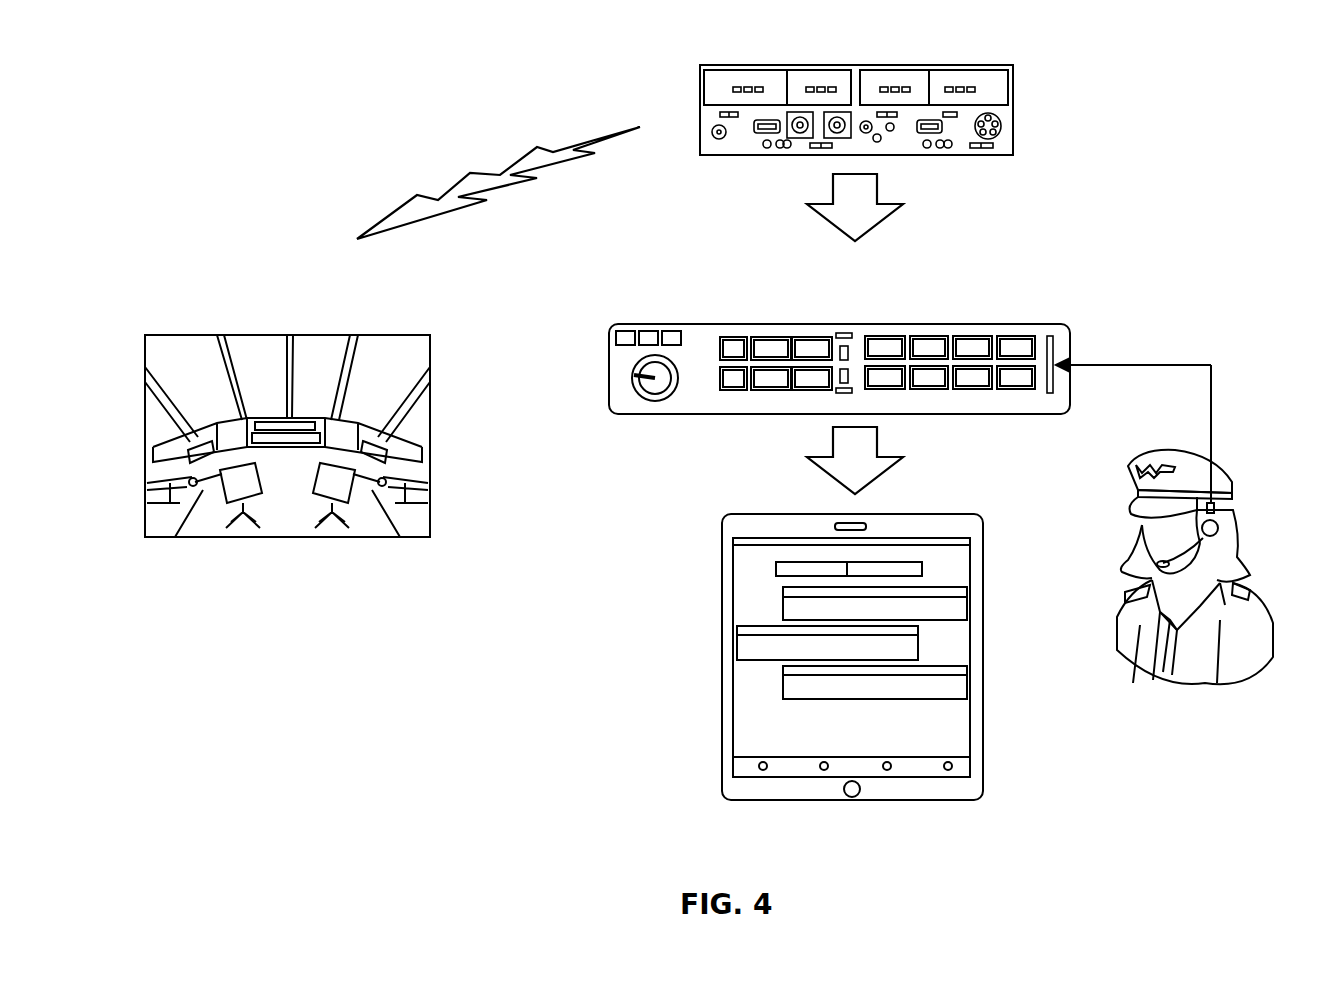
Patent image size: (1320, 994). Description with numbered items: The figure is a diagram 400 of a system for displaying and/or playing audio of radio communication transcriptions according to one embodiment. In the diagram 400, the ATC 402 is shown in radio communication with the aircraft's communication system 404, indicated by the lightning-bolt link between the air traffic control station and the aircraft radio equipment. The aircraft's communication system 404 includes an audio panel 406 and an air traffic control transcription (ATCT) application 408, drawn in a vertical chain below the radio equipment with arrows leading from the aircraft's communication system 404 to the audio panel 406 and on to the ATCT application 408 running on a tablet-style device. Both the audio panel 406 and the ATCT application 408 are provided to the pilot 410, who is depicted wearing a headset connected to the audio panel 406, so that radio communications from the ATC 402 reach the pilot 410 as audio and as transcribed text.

The diagram 400 is at (236, 74).
The ATC 402 is at (206, 334).
The aircraft's communication system 404 is at (763, 64).
The audio panel 406 is at (692, 322).
The air traffic control transcription (ATCT) application 408 is at (806, 514).
The pilot 410 is at (1148, 452).